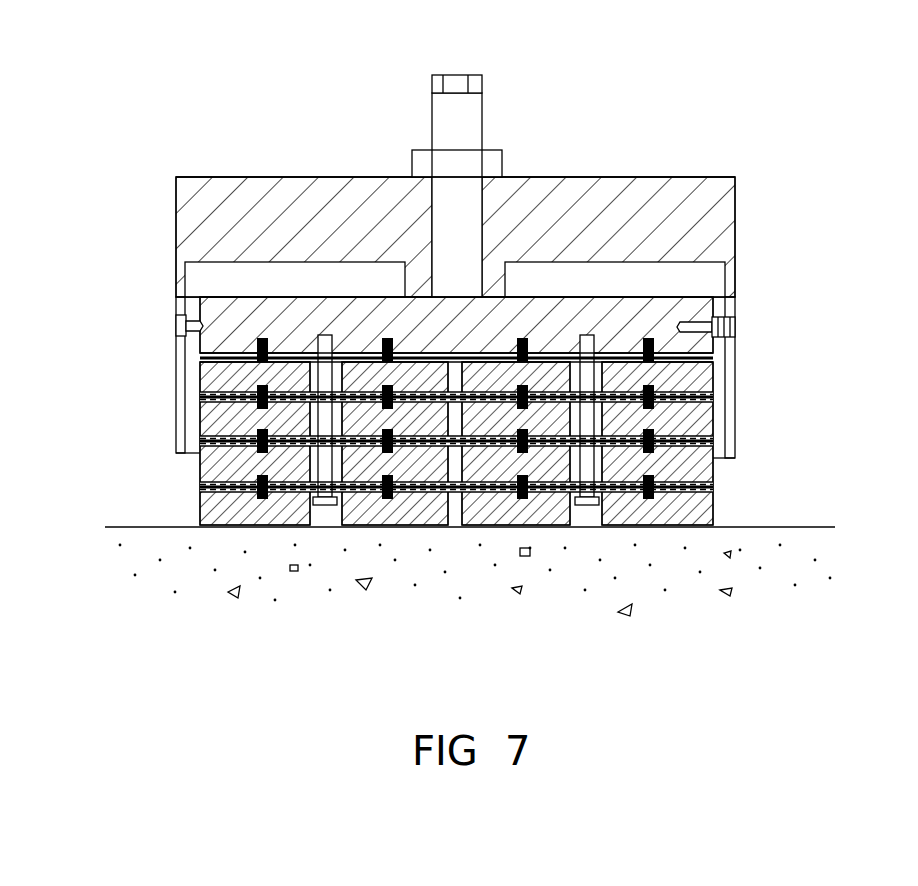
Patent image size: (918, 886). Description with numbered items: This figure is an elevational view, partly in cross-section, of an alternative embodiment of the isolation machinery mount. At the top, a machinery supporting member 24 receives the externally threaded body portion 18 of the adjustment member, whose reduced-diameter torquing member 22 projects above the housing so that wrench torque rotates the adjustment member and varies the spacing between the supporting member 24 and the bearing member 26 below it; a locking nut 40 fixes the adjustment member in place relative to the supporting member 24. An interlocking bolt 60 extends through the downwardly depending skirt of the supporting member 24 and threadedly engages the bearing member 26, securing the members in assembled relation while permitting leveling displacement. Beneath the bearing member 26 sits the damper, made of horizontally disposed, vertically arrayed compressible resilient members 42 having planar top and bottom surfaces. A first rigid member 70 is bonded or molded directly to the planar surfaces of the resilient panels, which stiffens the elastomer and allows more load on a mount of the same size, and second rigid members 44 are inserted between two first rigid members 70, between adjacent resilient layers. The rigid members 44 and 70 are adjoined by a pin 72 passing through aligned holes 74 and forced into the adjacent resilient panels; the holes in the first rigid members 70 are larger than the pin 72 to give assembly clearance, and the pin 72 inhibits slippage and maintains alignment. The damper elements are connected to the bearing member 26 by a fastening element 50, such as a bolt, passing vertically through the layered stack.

The externally threaded body portion 18 is at (483, 122).
The torquing member 22 is at (482, 76).
The supporting member 24 is at (672, 177).
The bearing member 26 is at (737, 262).
The locking nut 40 is at (410, 156).
The compressible resilient members 42 is at (600, 443).
The second rigid members 44 is at (450, 360).
The fastening element 50 is at (322, 337).
The interlocking bolt 60 is at (145, 318).
The first rigid member 70 is at (215, 358).
The pin 72 is at (700, 440).
The aligned holes 74 is at (263, 362).